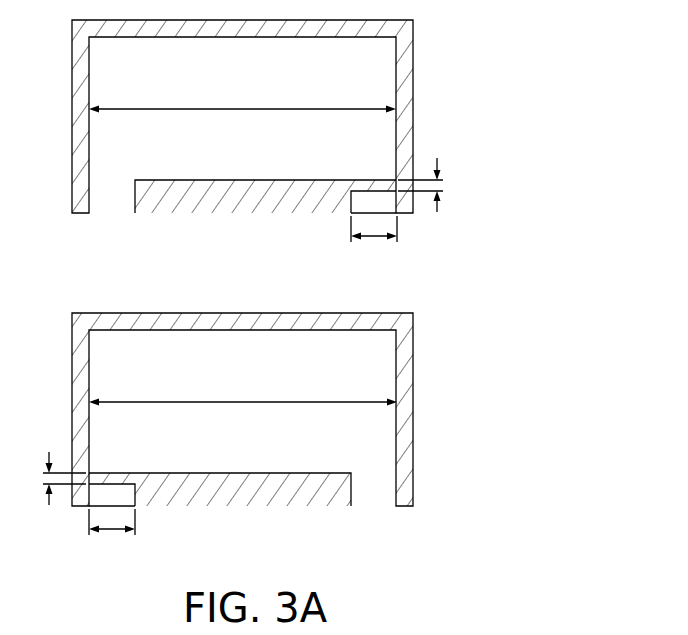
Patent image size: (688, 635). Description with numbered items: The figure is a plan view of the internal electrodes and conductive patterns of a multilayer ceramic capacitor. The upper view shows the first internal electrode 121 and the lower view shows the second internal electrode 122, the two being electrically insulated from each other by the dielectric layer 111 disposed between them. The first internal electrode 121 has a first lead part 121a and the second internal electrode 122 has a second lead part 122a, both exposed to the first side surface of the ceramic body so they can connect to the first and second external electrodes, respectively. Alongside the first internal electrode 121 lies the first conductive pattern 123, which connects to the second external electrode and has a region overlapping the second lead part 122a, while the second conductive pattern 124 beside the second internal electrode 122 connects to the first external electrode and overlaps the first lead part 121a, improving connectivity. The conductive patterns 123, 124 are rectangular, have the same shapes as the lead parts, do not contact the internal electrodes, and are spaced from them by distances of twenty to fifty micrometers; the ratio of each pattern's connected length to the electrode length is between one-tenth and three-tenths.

The dielectric layer 111 is at (397, 128).
The first internal electrode 121 is at (385, 70).
The second internal electrode 122 is at (385, 366).
The first lead part 121a is at (114, 207).
The second lead part 122a is at (371, 497).
The first conductive pattern 123 is at (357, 200).
The second conductive pattern 124 is at (130, 494).